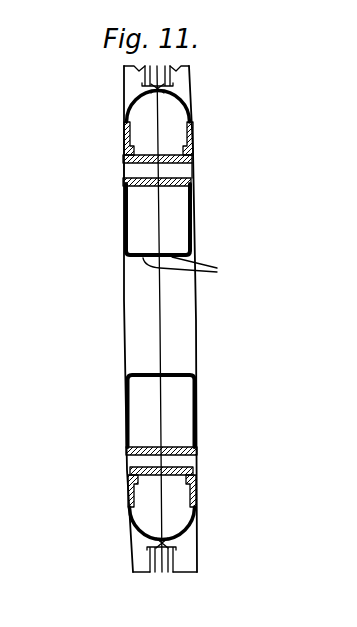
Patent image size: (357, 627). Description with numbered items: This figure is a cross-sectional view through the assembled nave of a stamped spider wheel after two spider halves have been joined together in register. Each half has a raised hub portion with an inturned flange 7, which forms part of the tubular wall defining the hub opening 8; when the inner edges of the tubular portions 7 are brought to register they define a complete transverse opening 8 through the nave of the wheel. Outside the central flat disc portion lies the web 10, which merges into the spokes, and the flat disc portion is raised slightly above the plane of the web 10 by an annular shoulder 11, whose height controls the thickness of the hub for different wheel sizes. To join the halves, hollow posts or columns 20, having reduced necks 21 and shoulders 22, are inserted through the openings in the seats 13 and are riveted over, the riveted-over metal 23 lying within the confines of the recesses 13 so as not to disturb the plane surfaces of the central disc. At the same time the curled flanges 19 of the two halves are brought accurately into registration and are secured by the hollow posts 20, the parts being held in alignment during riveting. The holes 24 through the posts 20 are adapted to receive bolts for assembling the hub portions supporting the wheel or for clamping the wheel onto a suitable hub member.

The inturned flange 7 is at (187, 269).
The hub opening 8 is at (175, 318).
The web 10 is at (129, 107).
The annular shoulder 11 is at (123, 122).
The seats 13 is at (198, 479).
The curled flanges 19 is at (150, 84).
The hollow posts or columns 20 is at (171, 152).
The reduced necks 21 is at (195, 171).
The shoulders 22 is at (136, 153).
The riveted-over metal 23 is at (193, 181).
The holes 24 is at (133, 170).